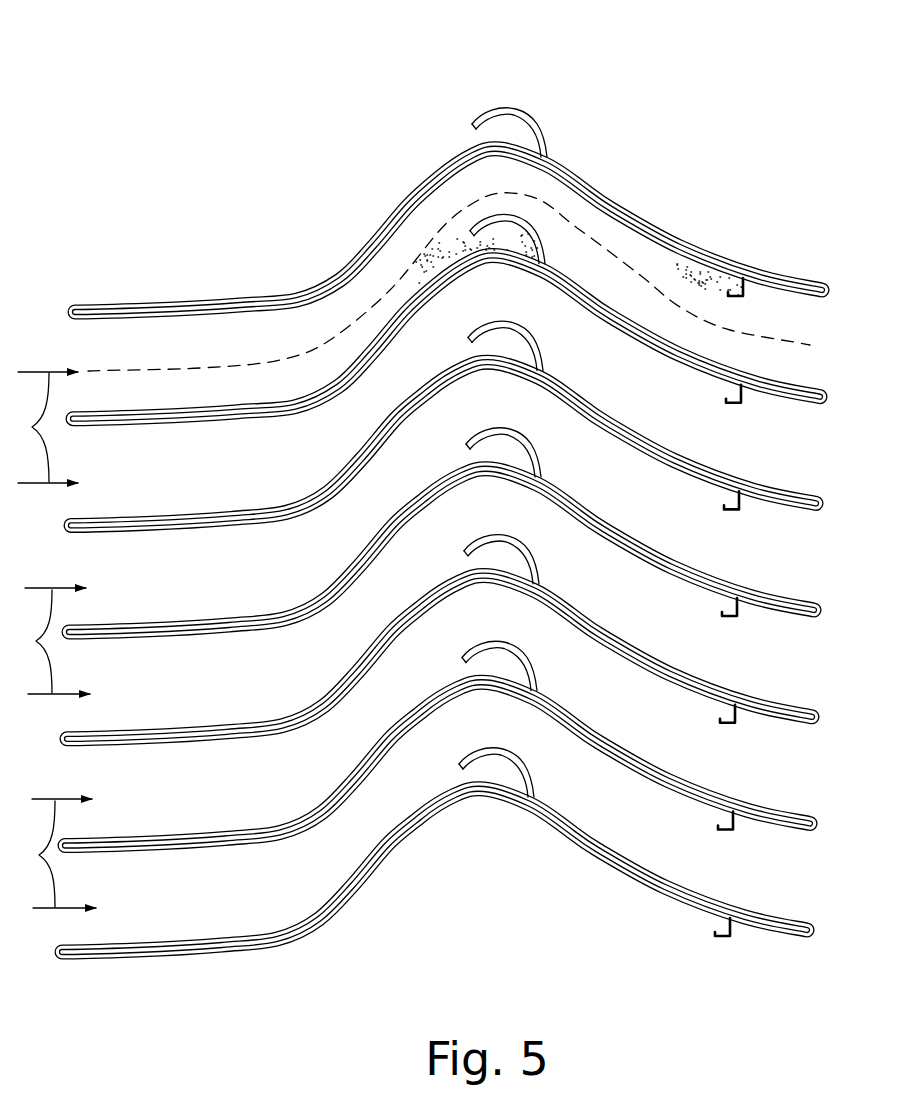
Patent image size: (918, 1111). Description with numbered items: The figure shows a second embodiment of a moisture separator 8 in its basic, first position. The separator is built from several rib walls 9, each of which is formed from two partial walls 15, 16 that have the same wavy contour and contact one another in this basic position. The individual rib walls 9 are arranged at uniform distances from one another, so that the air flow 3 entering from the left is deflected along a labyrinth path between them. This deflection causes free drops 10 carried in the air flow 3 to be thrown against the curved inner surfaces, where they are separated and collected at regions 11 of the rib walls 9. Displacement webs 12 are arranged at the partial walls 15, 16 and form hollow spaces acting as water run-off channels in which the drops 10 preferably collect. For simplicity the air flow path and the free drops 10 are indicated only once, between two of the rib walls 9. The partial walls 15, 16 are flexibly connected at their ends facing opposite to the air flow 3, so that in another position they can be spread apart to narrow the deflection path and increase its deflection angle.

The air flow 3 is at (410, 550).
The moisture separator 8 is at (330, 148).
The rib wall 9 is at (213, 302).
The free drops 10 is at (422, 262).
The regions 11 is at (448, 272).
The displacement web 12 is at (516, 104).
The partial wall 15 is at (292, 293).
The partial wall 16 is at (300, 309).